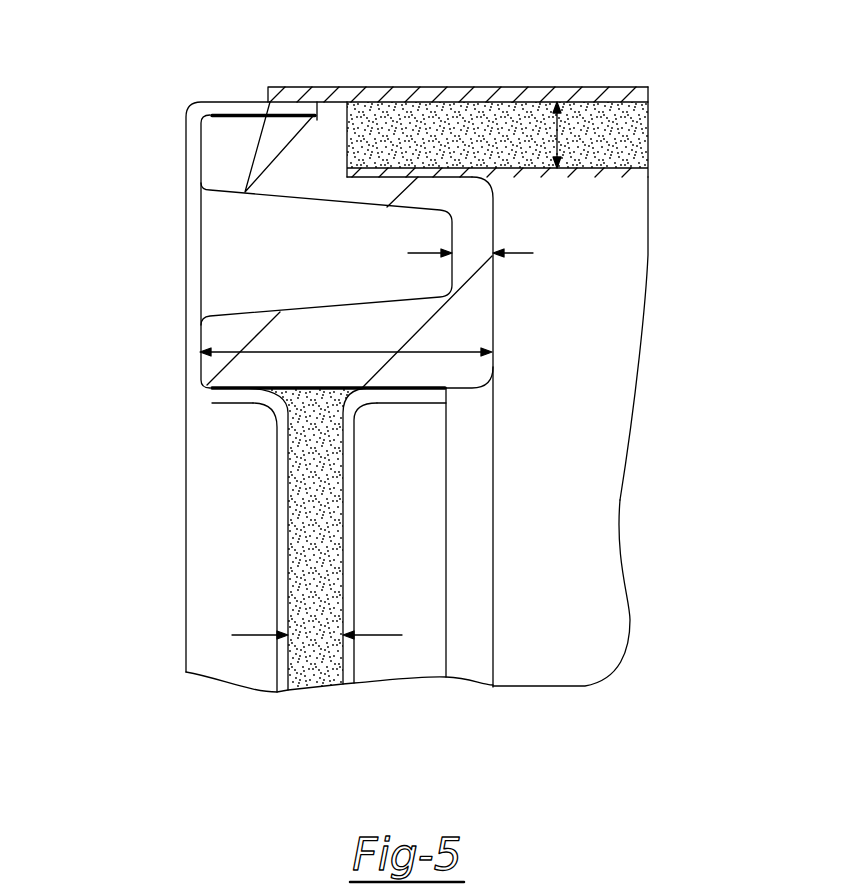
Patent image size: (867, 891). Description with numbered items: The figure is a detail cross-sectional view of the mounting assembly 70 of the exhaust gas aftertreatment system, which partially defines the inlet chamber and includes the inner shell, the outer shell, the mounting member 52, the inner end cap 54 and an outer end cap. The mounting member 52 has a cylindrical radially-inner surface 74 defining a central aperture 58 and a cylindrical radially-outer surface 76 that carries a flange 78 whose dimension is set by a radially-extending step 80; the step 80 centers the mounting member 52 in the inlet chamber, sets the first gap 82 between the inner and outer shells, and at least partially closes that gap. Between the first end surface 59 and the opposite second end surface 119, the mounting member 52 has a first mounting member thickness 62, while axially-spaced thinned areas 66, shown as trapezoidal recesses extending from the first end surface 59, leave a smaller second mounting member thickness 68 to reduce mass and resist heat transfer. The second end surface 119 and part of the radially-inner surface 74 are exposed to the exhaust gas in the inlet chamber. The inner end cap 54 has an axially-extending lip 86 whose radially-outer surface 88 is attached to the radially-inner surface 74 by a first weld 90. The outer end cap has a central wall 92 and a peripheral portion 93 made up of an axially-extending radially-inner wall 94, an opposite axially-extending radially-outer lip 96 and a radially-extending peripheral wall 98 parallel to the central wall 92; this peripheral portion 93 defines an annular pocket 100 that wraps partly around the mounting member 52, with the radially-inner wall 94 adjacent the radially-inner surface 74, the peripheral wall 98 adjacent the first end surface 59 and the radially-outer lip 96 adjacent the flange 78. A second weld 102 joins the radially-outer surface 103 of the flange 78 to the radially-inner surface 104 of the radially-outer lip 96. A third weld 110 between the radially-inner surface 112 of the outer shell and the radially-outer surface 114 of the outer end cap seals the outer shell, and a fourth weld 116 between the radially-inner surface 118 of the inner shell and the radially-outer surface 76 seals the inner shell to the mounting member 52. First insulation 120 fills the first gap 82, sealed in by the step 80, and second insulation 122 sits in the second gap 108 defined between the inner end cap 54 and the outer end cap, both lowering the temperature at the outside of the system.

The mounting member 52 is at (213, 148).
The inner end cap 54 is at (345, 566).
The central aperture 58 is at (418, 582).
The first end surface 59 is at (195, 163).
The mounting member thickness 62 is at (351, 347).
The thinned areas 66 is at (453, 265).
The second mounting member thickness 68 is at (472, 250).
The mounting assembly 70 is at (199, 116).
The radially-inner surface 74 is at (463, 390).
The radially-outer surface 76 is at (458, 170).
The flange 78 is at (331, 143).
The radially-extending step 80 is at (350, 146).
The first gap 82 is at (558, 132).
The axially-extending lip 86 is at (383, 404).
The radially-outer surface 88 is at (445, 387).
The first weld 90 is at (441, 395).
The central wall 92 is at (280, 549).
The peripheral portion 93 is at (177, 312).
The radially-inner wall 94 is at (213, 403).
The radially-outer lip 96 is at (201, 101).
The peripheral wall 98 is at (189, 326).
The pocket 100 is at (202, 307).
The second weld 102 is at (313, 117).
The radially-outer surface 103 is at (240, 101).
The radially-inner surface 104 is at (245, 192).
The second gap 108 is at (313, 633).
The third weld 110 is at (273, 101).
The radially-inner surface 112 is at (440, 111).
The radially-outer surface 114 is at (278, 84).
The fourth weld 116 is at (355, 178).
The radially-inner surface 118 is at (615, 177).
The second end surface 119 is at (493, 337).
The first insulation 120 is at (588, 112).
The second insulation 122 is at (303, 606).